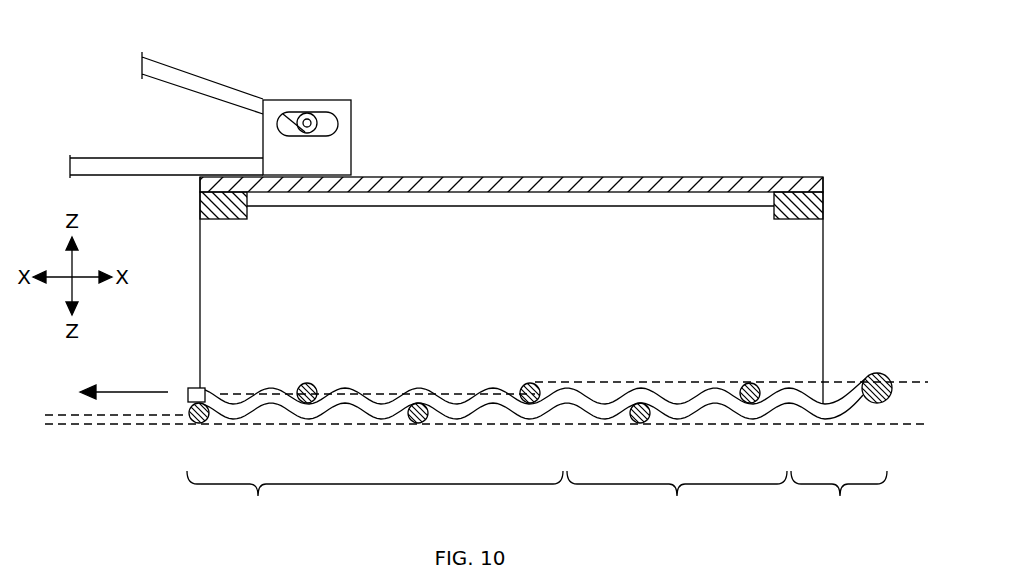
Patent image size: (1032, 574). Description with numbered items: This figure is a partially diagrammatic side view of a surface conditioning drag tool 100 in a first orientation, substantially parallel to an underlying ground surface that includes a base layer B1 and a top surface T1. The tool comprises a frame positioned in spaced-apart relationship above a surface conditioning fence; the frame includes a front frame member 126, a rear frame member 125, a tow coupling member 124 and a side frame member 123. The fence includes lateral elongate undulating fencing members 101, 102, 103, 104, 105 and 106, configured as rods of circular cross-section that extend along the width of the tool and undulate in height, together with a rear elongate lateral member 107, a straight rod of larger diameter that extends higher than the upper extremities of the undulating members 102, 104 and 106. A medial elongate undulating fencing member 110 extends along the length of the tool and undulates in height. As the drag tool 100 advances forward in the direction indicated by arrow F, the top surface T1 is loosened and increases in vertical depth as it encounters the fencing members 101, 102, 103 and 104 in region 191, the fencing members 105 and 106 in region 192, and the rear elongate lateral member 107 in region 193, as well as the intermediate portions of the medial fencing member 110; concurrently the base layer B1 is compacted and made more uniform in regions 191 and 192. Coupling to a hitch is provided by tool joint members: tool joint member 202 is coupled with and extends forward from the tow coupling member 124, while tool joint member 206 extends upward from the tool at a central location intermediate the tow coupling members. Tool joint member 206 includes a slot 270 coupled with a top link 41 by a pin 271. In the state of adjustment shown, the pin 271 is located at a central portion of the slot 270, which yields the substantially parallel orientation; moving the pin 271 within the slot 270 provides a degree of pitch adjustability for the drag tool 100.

The top link 41 is at (218, 86).
The surface conditioning drag tool 100 is at (895, 157).
The lateral elongate undulating fencing member 101 is at (198, 424).
The lateral elongate undulating fencing member 102 is at (306, 382).
The lateral elongate undulating fencing member 103 is at (417, 424).
The lateral elongate undulating fencing member 104 is at (530, 382).
The lateral elongate undulating fencing member 105 is at (639, 424).
The lateral elongate undulating fencing member 106 is at (750, 382).
The rear elongate lateral member 107 is at (874, 373).
The medial elongate undulating fencing member 110 is at (867, 403).
The side frame member 123 is at (823, 260).
The tow coupling member 124 is at (518, 176).
The rear frame member 125 is at (823, 196).
The front frame member 126 is at (199, 197).
The region 191 is at (375, 499).
The region 192 is at (677, 499).
The region 193 is at (839, 499).
The tool joint member 202 is at (105, 157).
The tool joint member 206 is at (351, 148).
The slot 270 is at (351, 117).
The pin 271 is at (306, 113).
The top surface T1 is at (916, 380).
The base layer B1 is at (914, 426).
The arrow indicating forward direction F is at (125, 391).